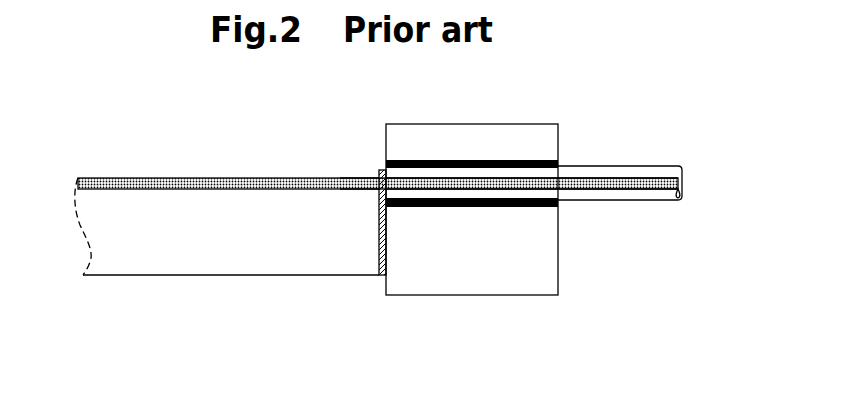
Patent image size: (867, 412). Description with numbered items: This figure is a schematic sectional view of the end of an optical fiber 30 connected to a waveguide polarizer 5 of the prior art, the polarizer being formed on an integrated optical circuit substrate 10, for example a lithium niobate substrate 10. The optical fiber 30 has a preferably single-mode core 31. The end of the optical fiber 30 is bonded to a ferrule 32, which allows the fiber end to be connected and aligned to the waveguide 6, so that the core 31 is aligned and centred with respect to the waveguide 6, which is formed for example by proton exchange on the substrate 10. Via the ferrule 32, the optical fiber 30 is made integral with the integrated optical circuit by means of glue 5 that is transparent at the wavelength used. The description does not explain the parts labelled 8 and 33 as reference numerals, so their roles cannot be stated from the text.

The glue 5 is at (385, 277).
The waveguide 6 is at (210, 170).
The end portion of coating layer 8 is at (352, 182).
The integrated optical circuit substrate 10 is at (246, 229).
The optical fiber 30 is at (631, 160).
The core 31 is at (641, 206).
The ferrule 32 is at (404, 182).
The connector block 33 is at (490, 264).